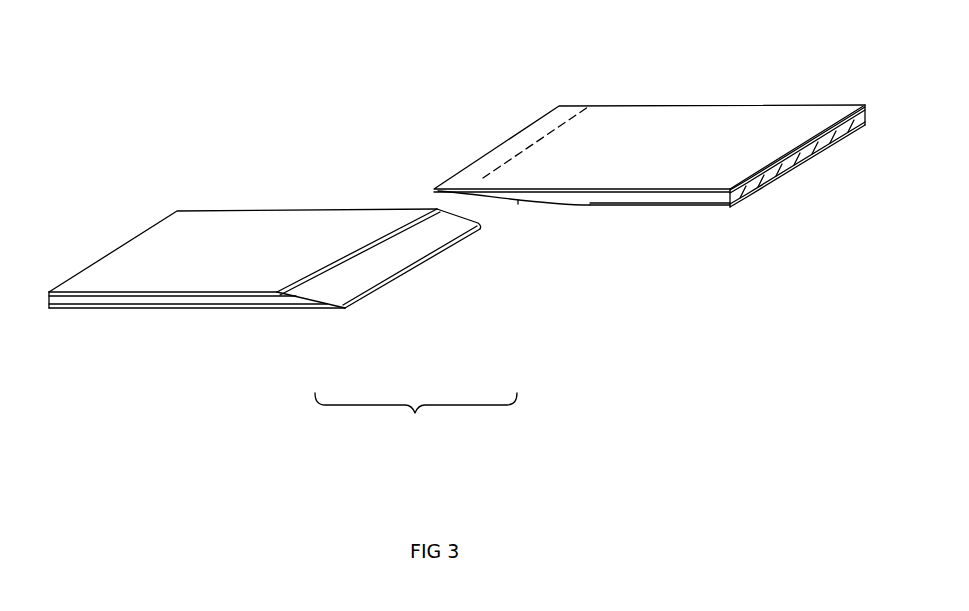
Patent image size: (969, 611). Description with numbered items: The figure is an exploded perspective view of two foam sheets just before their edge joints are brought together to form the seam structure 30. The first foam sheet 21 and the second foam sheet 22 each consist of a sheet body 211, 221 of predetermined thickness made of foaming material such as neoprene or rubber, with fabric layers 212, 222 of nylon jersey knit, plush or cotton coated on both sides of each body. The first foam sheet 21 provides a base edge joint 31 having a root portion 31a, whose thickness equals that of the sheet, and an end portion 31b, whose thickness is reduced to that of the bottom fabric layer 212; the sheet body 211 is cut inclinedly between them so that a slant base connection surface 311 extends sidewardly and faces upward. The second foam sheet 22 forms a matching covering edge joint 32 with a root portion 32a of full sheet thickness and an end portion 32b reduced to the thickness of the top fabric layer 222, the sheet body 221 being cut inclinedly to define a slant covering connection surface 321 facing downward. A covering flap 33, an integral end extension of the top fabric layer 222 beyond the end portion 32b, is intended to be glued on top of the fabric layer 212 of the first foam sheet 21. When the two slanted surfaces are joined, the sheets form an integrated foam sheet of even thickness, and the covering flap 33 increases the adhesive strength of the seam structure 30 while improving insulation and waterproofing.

The first foam sheet 21 is at (203, 222).
The sheet body 211 is at (150, 302).
The fabric layer 212 is at (253, 308).
The second foam sheet 22 is at (735, 102).
The sheet body 221 is at (678, 197).
The fabric layer 222 is at (787, 177).
The seam structure 30 is at (416, 417).
The base edge joint 31 is at (390, 259).
The root portion 31a is at (339, 277).
The end portion 31b is at (412, 253).
The slant base connection surface 311 is at (353, 285).
The covering edge joint 32 is at (584, 217).
The root portion 32a is at (588, 200).
The end portion 32b is at (483, 190).
The slant covering connection surface 321 is at (518, 200).
The covering flap 33 is at (513, 150).